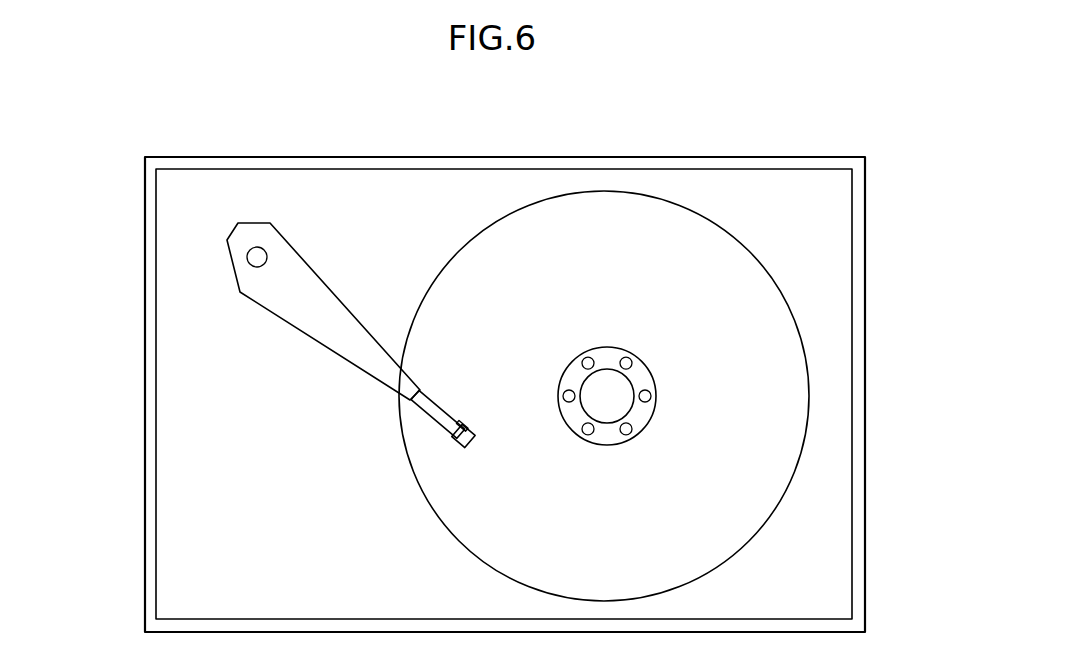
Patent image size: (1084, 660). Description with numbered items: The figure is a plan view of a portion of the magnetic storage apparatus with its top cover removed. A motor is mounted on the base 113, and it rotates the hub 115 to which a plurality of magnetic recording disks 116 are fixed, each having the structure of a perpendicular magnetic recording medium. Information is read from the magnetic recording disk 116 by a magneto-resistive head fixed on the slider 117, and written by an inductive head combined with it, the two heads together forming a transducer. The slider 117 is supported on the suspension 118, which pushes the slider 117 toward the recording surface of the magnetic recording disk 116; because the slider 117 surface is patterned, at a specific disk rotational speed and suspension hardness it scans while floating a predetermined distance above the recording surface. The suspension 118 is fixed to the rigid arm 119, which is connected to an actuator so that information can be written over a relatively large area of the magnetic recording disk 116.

The base 113 is at (866, 550).
The hub 115 is at (615, 395).
The magnetic recording disk 116 is at (717, 237).
The slider 117 is at (470, 430).
The suspension 118 is at (434, 406).
The rigid arm 119 is at (308, 308).